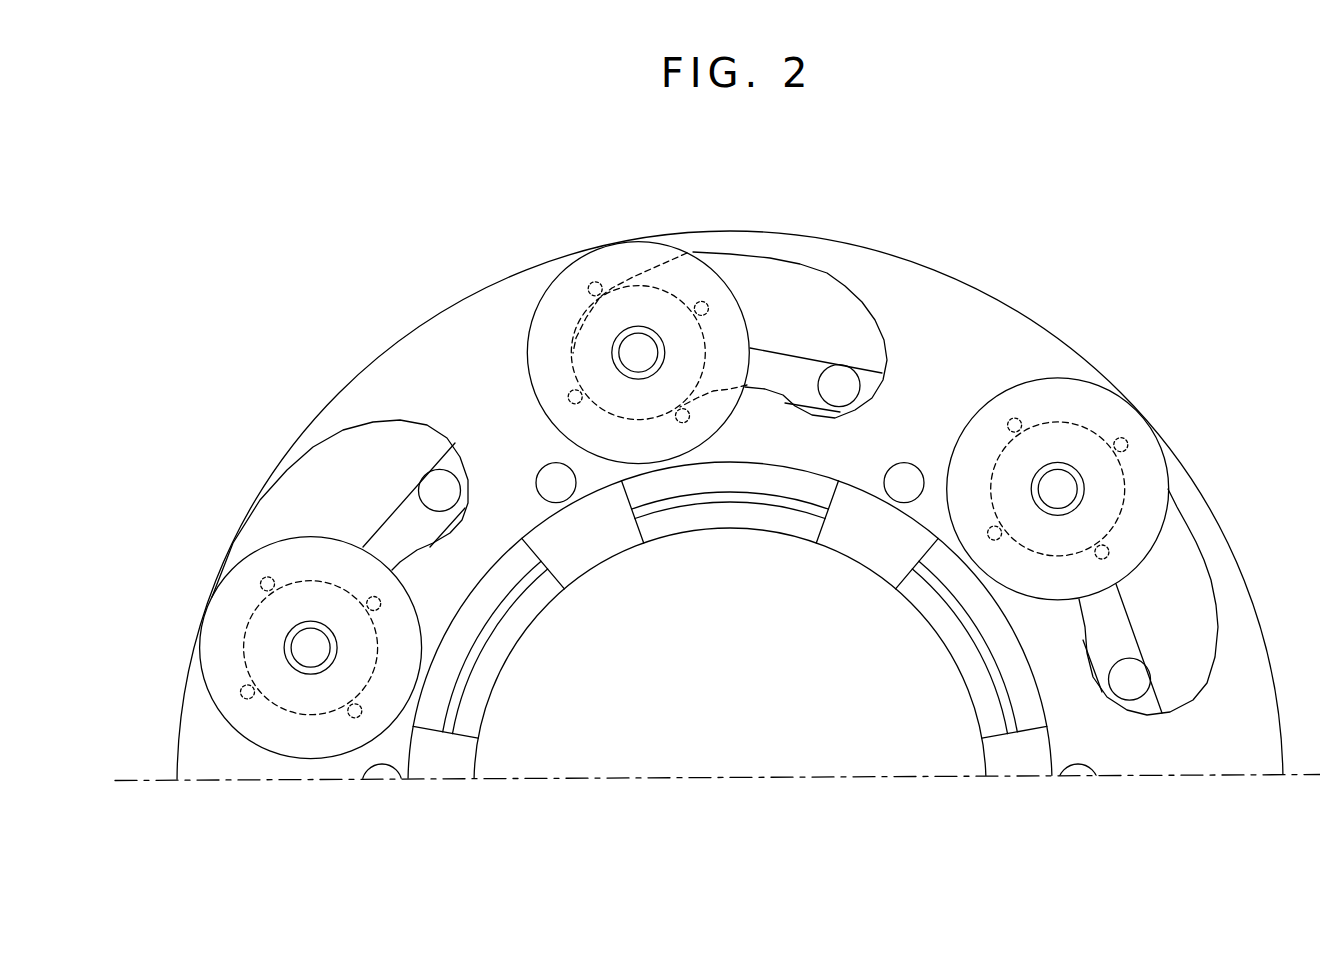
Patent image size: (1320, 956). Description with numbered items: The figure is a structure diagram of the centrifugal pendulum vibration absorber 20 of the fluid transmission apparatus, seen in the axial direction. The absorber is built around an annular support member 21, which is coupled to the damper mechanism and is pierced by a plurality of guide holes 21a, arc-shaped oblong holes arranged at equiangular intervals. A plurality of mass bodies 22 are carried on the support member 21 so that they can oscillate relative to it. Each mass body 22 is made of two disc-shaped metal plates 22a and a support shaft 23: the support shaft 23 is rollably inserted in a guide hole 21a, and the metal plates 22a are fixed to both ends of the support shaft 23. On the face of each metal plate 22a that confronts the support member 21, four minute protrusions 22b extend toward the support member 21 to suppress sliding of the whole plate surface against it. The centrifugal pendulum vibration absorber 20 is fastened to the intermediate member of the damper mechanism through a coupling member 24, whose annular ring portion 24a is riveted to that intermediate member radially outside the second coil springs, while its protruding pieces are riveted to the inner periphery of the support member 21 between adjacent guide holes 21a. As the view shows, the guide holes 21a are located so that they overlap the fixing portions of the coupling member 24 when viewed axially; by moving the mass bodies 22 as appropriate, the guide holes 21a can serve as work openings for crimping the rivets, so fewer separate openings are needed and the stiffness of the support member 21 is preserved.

The centrifugal pendulum vibration absorber 20 is at (1040, 320).
The support member 21 is at (378, 371).
The guide hole 21a is at (828, 276).
The mass body 22 is at (686, 247).
The metal plate 22a is at (560, 289).
The minute protrusion 22b is at (597, 283).
The support shaft 23 is at (638, 352).
The coupling member 24 is at (374, 517).
The annular ring portion 24a is at (795, 366).